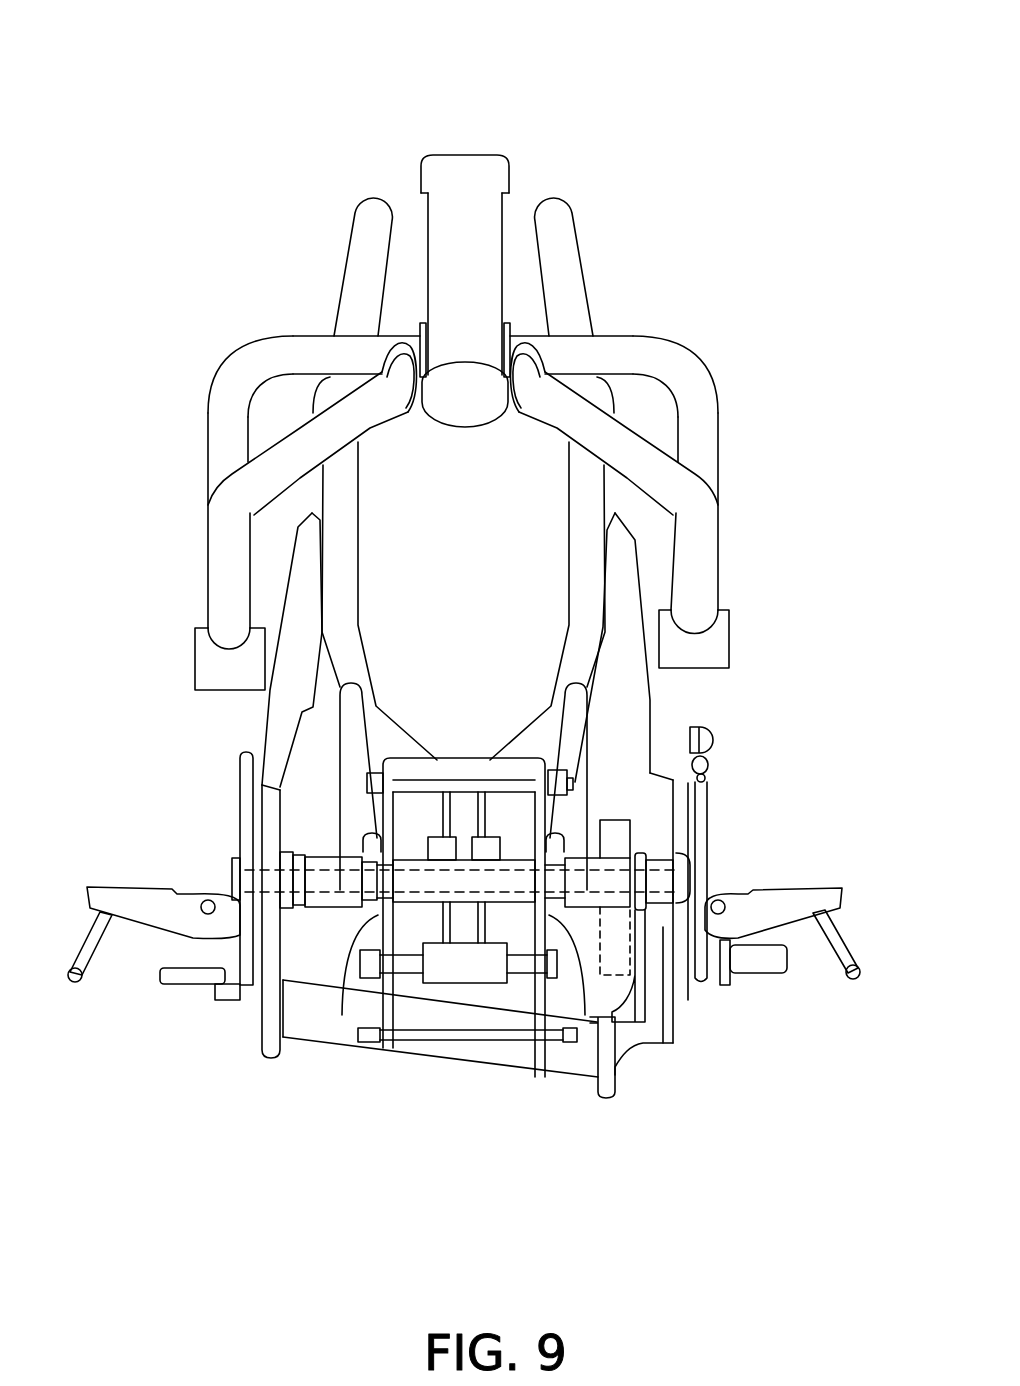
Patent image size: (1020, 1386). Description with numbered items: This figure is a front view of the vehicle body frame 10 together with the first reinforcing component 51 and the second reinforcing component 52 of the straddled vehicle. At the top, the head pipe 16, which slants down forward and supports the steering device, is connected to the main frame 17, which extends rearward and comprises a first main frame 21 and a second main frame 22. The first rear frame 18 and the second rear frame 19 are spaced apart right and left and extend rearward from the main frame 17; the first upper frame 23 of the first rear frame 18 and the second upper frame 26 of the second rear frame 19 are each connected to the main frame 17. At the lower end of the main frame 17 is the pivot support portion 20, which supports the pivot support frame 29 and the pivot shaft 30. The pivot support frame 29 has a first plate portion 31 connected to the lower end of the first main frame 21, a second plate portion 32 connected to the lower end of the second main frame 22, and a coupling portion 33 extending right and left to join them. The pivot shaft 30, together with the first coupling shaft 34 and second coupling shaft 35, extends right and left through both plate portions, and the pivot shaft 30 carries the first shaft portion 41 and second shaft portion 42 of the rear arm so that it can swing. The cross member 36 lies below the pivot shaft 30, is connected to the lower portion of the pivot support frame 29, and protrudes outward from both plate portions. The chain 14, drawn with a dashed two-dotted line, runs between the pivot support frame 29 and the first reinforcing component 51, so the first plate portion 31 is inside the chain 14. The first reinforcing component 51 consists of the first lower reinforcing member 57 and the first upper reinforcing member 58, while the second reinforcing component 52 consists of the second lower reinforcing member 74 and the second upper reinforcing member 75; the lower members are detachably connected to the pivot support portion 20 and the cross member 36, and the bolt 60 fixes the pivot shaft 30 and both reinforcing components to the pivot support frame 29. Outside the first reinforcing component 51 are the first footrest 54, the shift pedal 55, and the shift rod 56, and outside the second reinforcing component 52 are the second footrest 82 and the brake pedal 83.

The vehicle body frame 10 is at (603, 112).
The chain 14 is at (650, 837).
The head pipe 16 is at (462, 160).
The main frame 17 is at (622, 502).
The first rear frame 18 is at (615, 310).
The second rear frame 19 is at (315, 305).
The pivot support portion 20 is at (340, 930).
The first main frame 21 is at (588, 540).
The second main frame 22 is at (340, 540).
The first upper frame 23 is at (567, 243).
The second upper frame 26 is at (362, 247).
The pivot support frame 29 is at (472, 740).
The pivot shaft 30 is at (413, 920).
The first plate portion 31 is at (575, 920).
The second plate portion 32 is at (345, 925).
The coupling portion 33 is at (512, 770).
The first coupling shaft 34 is at (440, 778).
The second coupling shaft 35 is at (458, 1035).
The cross member 36 is at (537, 1055).
The first shaft portion 41 is at (608, 862).
The second shaft portion 42 is at (325, 860).
The first reinforcing component 51 is at (680, 708).
The second reinforcing component 52 is at (242, 718).
The first footrest 54 is at (790, 905).
The shift pedal 55 is at (766, 963).
The shift rod 56 is at (700, 795).
The first lower reinforcing member 57 is at (658, 1000).
The first upper reinforcing member 58 is at (665, 760).
The bolt 60 is at (268, 865).
The second lower reinforcing member 74 is at (268, 1003).
The second upper reinforcing member 75 is at (262, 758).
The second footrest 82 is at (115, 897).
The brake pedal 83 is at (173, 975).